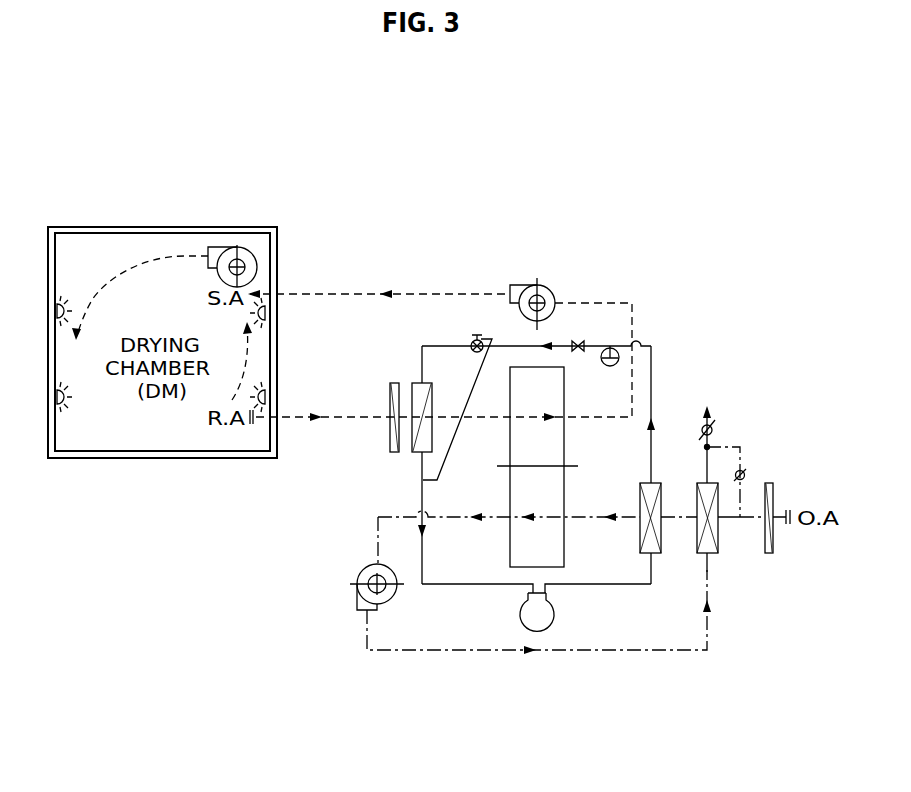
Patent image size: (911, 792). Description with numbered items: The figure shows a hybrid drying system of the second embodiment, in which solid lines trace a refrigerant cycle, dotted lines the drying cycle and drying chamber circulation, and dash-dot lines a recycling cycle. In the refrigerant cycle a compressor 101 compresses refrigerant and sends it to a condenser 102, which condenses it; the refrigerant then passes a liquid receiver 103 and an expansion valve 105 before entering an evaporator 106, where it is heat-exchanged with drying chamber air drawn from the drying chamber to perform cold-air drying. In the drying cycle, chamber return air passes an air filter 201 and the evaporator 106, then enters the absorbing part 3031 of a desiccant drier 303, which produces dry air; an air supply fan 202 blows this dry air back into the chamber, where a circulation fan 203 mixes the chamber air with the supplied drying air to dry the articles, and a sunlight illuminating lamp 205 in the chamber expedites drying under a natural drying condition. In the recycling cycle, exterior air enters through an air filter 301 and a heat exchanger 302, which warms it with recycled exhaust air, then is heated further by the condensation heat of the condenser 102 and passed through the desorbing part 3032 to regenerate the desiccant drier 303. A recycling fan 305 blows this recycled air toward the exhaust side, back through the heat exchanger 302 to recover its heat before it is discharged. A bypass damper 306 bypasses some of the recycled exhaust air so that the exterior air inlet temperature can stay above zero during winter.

The compressor 101 is at (555, 616).
The condenser 102 is at (652, 483).
The liquid receiver 103 is at (610, 348).
The expansion valve 105 is at (477, 340).
The evaporator 106 is at (425, 383).
The air filter 201 is at (393, 383).
The air supply fan 202 is at (537, 285).
The circulation fan 203 is at (237, 247).
The sunlight illuminating lamp 205 is at (57, 311).
The air filter 301 is at (775, 483).
The heat exchanger 302 is at (703, 483).
The desiccant drier 303 is at (552, 467).
The absorbing part 3031 is at (541, 401).
The desorbing part 3032 is at (541, 499).
The recycling fan 305 is at (376, 564).
The bypass damper 306 is at (745, 470).